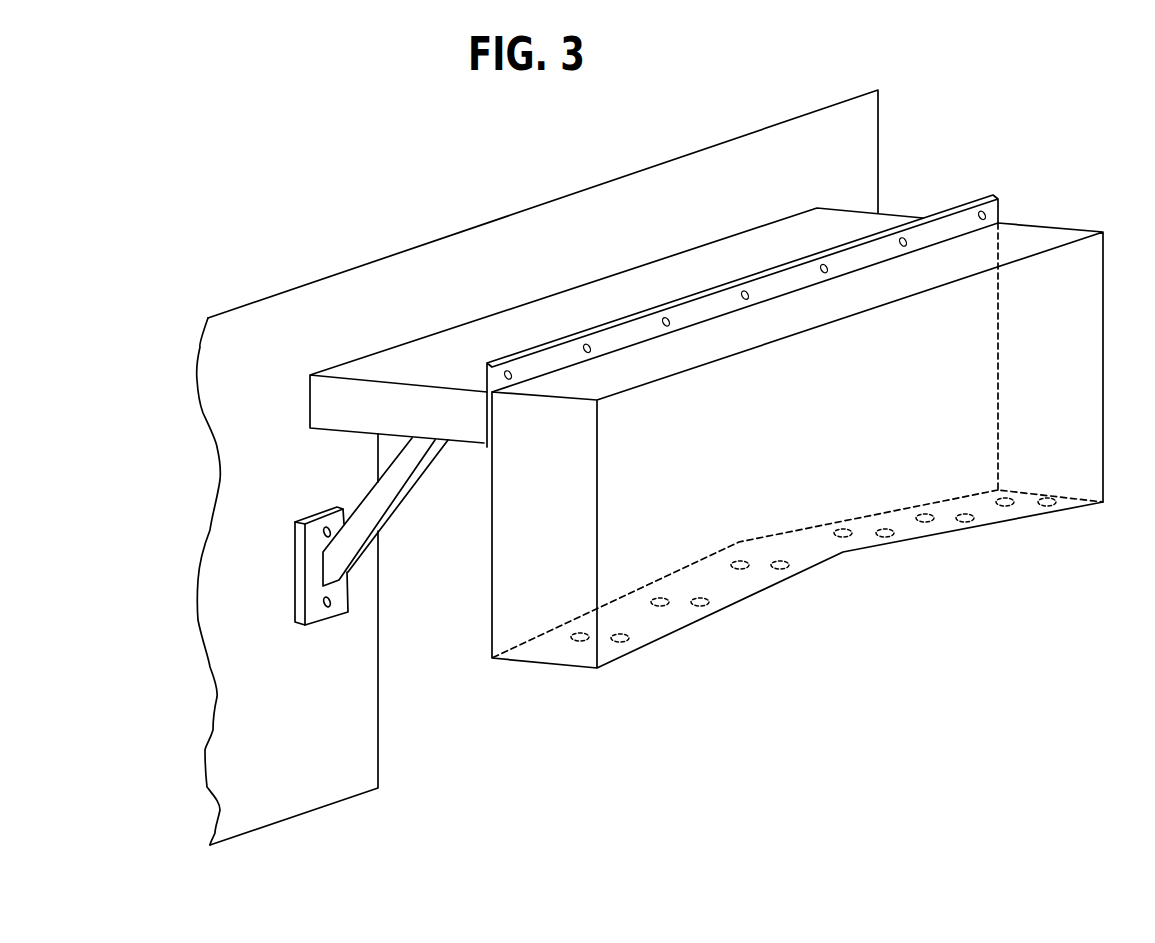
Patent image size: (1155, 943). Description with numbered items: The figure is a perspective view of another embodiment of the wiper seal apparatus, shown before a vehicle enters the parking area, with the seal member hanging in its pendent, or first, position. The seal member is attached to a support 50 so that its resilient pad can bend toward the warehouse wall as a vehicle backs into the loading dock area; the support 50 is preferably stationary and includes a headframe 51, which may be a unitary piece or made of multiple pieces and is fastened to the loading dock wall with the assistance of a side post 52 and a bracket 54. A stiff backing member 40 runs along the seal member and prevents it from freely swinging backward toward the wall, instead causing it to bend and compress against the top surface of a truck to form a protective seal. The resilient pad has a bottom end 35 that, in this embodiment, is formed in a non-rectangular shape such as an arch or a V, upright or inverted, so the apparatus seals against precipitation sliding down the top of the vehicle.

The bottom end 35 is at (933, 535).
The stiff backing member 40 is at (482, 408).
The support 50 is at (303, 372).
The headframe 51 is at (358, 417).
The side post 52 is at (398, 485).
The bracket 54 is at (318, 613).